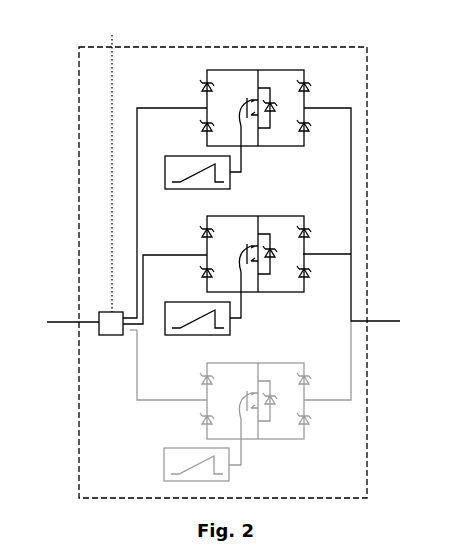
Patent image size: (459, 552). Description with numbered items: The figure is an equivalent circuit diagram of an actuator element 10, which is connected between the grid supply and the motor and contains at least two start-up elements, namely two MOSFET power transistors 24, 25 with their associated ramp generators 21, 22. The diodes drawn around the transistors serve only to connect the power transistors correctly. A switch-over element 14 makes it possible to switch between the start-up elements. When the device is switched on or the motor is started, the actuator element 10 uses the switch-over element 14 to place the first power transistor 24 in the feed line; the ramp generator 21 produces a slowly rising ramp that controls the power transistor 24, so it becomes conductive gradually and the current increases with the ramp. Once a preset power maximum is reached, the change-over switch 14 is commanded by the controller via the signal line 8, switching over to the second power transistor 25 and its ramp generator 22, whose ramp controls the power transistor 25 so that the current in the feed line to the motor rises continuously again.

The actuator element 10 is at (72, 68).
The signal line 8 is at (112, 150).
The switch-over element 14 is at (99, 312).
The ramp generator 21 is at (165, 172).
The ramp generator 22 is at (165, 325).
The power transistor 24 is at (243, 127).
The power transistor 25 is at (262, 288).